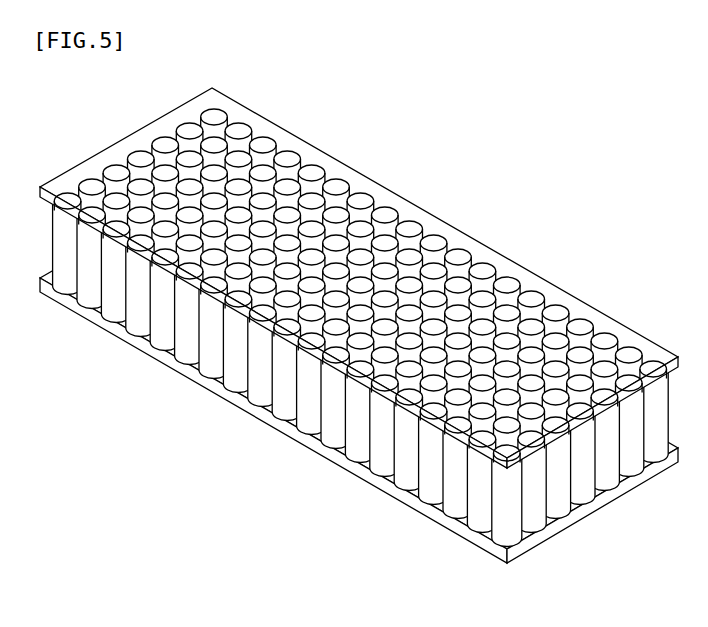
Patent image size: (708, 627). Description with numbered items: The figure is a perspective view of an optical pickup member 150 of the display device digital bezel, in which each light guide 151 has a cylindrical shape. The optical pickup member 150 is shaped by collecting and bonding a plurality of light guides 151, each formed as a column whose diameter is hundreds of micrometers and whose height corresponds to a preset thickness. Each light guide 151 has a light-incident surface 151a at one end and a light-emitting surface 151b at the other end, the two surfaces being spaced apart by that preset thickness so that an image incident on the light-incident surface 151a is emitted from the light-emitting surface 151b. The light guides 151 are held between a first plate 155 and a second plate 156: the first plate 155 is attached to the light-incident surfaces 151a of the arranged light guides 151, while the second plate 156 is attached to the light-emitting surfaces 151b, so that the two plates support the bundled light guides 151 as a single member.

The optical pickup member 150 is at (359, 341).
The light guide 151 is at (361, 374).
The light-incident surface 151a is at (178, 377).
The light-emitting surface 151b is at (413, 228).
The first plate 155 is at (458, 528).
The second plate 156 is at (587, 302).